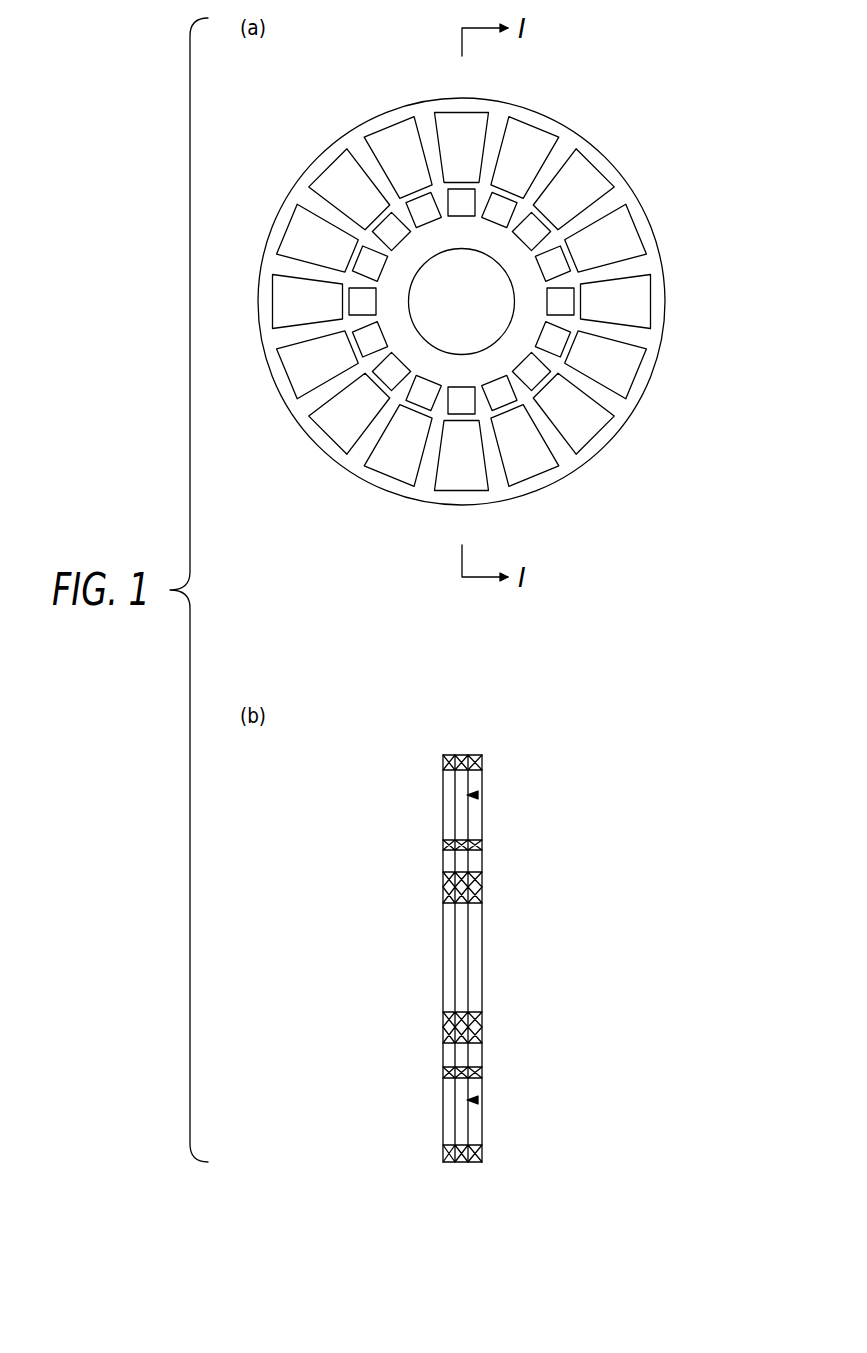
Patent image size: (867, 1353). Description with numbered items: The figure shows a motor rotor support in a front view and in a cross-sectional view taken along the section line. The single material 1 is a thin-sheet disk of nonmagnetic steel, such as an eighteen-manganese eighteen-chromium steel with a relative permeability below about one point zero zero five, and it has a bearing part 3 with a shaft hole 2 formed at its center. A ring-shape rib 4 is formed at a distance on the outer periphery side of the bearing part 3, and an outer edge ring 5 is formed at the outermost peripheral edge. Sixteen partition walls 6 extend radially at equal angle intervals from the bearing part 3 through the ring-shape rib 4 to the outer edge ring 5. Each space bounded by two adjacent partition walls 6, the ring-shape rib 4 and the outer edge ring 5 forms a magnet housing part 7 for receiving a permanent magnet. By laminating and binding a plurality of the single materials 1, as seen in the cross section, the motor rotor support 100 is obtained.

The single material 1 is at (306, 161).
The shaft hole 2 is at (445, 330).
The bearing part 3 is at (480, 238).
The ring-shape rib 4 is at (545, 220).
The outer edge ring 5 is at (645, 228).
The partition walls 6 is at (597, 387).
The magnet housing part 7 is at (403, 158).
The motor rotor support 100 is at (631, 485).